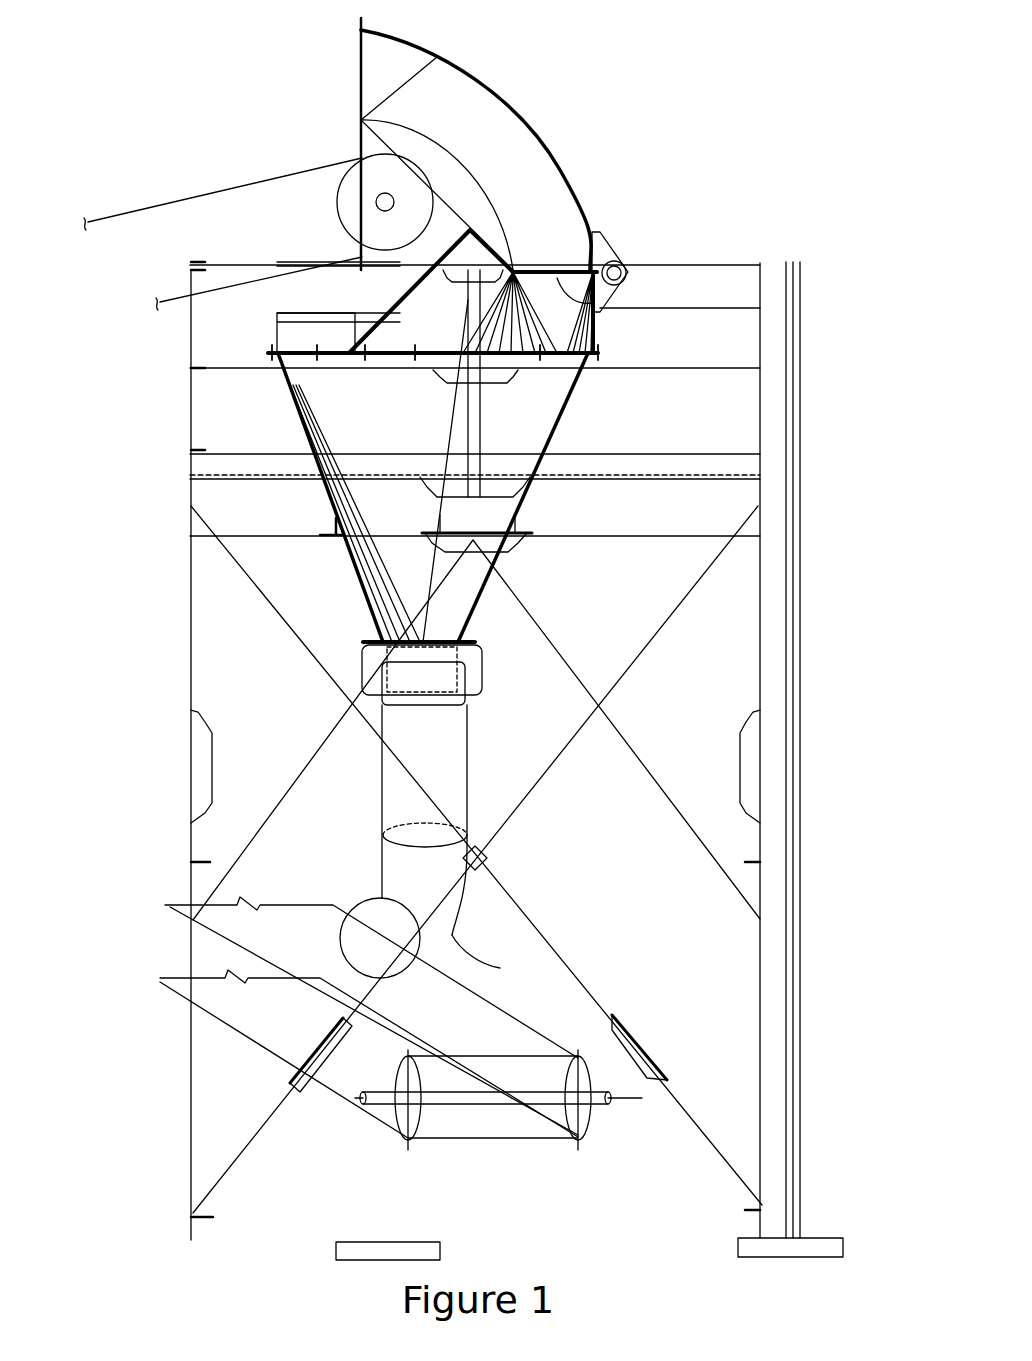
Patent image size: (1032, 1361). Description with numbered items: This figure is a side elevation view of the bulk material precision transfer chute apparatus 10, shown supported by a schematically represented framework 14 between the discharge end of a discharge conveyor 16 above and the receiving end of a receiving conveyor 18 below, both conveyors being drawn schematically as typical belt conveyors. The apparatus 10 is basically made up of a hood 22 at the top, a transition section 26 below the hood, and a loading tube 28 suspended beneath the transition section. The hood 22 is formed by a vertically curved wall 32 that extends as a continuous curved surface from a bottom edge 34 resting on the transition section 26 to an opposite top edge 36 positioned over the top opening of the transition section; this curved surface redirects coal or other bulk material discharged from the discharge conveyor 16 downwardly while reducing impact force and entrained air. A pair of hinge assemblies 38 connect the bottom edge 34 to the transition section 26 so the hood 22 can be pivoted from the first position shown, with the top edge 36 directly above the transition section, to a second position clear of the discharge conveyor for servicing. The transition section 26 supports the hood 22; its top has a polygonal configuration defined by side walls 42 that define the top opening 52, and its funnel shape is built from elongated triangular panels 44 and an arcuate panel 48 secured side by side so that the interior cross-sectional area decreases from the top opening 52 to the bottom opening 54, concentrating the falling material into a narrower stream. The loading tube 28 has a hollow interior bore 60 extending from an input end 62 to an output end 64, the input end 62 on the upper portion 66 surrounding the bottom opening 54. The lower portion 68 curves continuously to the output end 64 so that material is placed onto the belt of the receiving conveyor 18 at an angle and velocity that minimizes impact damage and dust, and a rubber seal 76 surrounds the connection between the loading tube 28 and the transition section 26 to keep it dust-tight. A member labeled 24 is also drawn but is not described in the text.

The bulk material precision transfer chute apparatus 10 is at (683, 131).
The framework 14 is at (775, 800).
The discharge conveyor 16 is at (200, 190).
The receiving conveyor 18 is at (177, 985).
The hood 22 is at (493, 133).
The guide member 24 is at (293, 330).
The transition section 26 is at (327, 407).
The loading tube 28 is at (410, 800).
The vertically curved wall 32 is at (562, 155).
The bottom edge 34 is at (757, 308).
The top edge 36 is at (360, 30).
The hinge assemblies 38 is at (623, 262).
The side walls 42 is at (352, 345).
The elongated triangular panels 44 is at (358, 584).
The arcuate panel 48 is at (545, 410).
The top opening 52 is at (335, 340).
The bottom opening 54 is at (443, 697).
The hollow interior bore 60 is at (422, 890).
The input end 62 is at (462, 650).
The output end 64 is at (340, 937).
The upper portion 66 is at (382, 773).
The lower portion 68 is at (425, 940).
The seal 76 is at (362, 660).